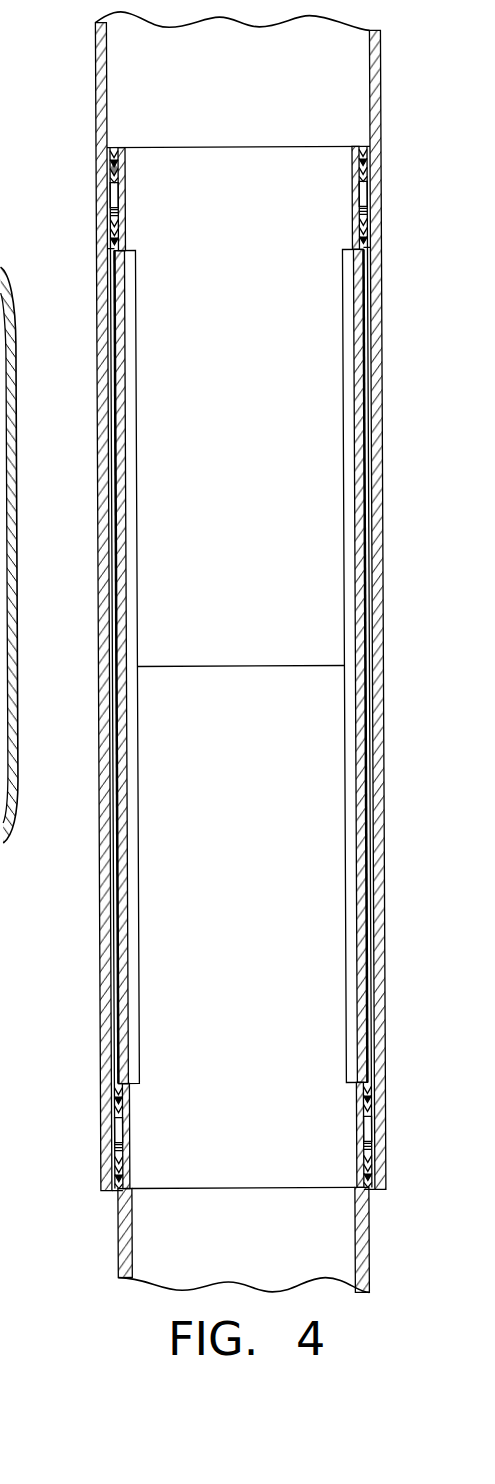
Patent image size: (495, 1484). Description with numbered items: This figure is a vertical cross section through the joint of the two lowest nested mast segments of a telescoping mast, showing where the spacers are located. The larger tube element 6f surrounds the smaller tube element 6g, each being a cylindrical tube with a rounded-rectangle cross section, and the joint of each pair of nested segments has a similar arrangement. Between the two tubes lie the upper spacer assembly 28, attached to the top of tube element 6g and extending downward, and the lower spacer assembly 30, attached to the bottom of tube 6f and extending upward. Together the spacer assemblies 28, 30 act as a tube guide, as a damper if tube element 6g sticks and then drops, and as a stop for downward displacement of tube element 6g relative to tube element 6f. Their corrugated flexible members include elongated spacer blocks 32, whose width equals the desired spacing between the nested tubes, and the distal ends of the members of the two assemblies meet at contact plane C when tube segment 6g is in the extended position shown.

The tube element 6f is at (372, 300).
The tube element 6g is at (128, 957).
The upper spacer assembly 28 is at (100, 231).
The lower spacer assembly 30 is at (98, 1183).
The spacer block 32 is at (122, 193).
The contact plane C is at (233, 666).